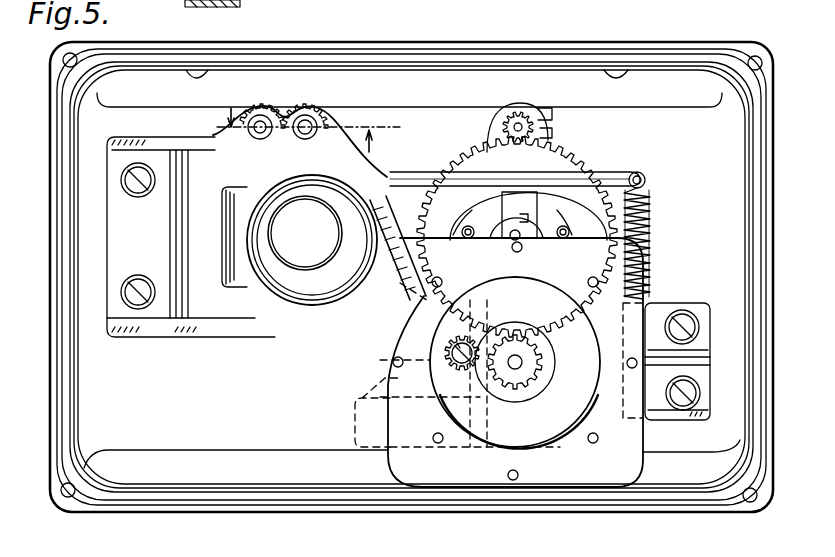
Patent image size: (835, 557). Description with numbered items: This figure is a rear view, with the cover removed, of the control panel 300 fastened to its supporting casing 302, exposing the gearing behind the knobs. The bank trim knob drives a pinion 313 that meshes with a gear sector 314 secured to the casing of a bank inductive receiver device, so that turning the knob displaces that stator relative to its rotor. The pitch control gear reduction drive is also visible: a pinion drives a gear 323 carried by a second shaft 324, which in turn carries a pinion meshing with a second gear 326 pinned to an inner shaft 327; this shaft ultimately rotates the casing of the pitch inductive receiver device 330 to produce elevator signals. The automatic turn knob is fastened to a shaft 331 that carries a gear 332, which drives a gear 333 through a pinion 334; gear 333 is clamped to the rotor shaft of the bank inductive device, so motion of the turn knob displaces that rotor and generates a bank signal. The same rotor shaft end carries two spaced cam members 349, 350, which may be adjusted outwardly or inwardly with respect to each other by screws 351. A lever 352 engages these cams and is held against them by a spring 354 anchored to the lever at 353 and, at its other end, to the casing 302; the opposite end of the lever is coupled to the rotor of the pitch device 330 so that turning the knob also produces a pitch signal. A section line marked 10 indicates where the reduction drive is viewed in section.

The section line 10- 10 is at (300, 133).
The control panel 300 is at (87, 500).
The supporting casing 302 is at (214, 500).
The pinion 313 is at (522, 112).
The gear sector 314 is at (532, 165).
The gear 323 is at (265, 105).
The second shaft 324 is at (258, 134).
The second gear 326 is at (306, 107).
The shaft 327 is at (312, 122).
The inductive receiver device 330 is at (320, 196).
The shaft 331 is at (520, 366).
The gear 332 is at (540, 360).
The gear 333 is at (438, 300).
The pinion 334 is at (448, 343).
The cam member 349 is at (465, 236).
The cam member 350 is at (547, 225).
The screws 351 is at (470, 240).
The lever 352 is at (570, 180).
The spring anchor point 353 is at (644, 176).
The spring 354 is at (652, 212).